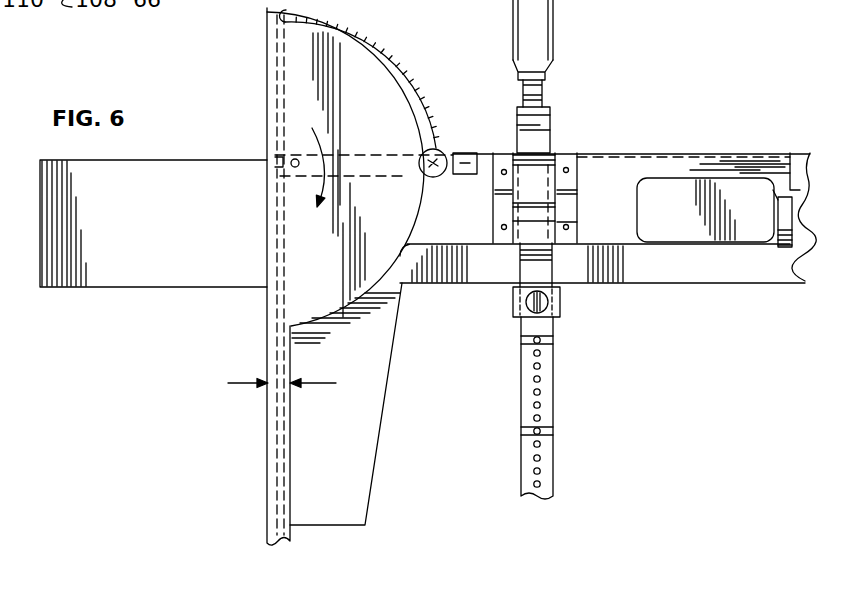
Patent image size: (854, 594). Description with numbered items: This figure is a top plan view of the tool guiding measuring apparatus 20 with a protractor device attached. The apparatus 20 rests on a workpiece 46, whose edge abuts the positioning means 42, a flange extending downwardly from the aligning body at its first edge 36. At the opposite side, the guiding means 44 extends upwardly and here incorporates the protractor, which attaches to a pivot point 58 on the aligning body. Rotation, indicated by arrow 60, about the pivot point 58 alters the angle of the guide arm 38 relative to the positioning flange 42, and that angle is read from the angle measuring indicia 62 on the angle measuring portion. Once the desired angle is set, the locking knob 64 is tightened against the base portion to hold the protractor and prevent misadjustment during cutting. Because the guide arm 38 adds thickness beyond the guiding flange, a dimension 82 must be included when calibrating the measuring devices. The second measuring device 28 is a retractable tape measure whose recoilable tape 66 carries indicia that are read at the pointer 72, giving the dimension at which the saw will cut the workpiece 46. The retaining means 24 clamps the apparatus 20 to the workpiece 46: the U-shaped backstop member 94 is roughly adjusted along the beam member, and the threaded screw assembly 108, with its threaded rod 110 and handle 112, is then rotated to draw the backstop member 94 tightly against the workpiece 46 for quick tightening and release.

The tool guiding measuring apparatus 20 is at (645, 50).
The retaining means 24 is at (503, 68).
The second measuring device 28 is at (700, 245).
The first edge 36 is at (393, 53).
The guide arm 38 is at (267, 467).
The positioning means 42 is at (668, 155).
The guiding means 44 is at (262, 411).
The workpiece 46 is at (122, 291).
The pivot point 58 is at (280, 163).
The arrow 60 is at (271, 133).
The angle measuring indicia 62 is at (394, 56).
The locking knob 64 is at (428, 158).
The tape 66 is at (806, 152).
The pointer 72 is at (786, 247).
The dimension 82 is at (267, 383).
The backstop member 94 is at (567, 300).
The threaded screw assembly 108 is at (518, 100).
The threaded rod 110 is at (543, 100).
The handle 112 is at (550, 25).